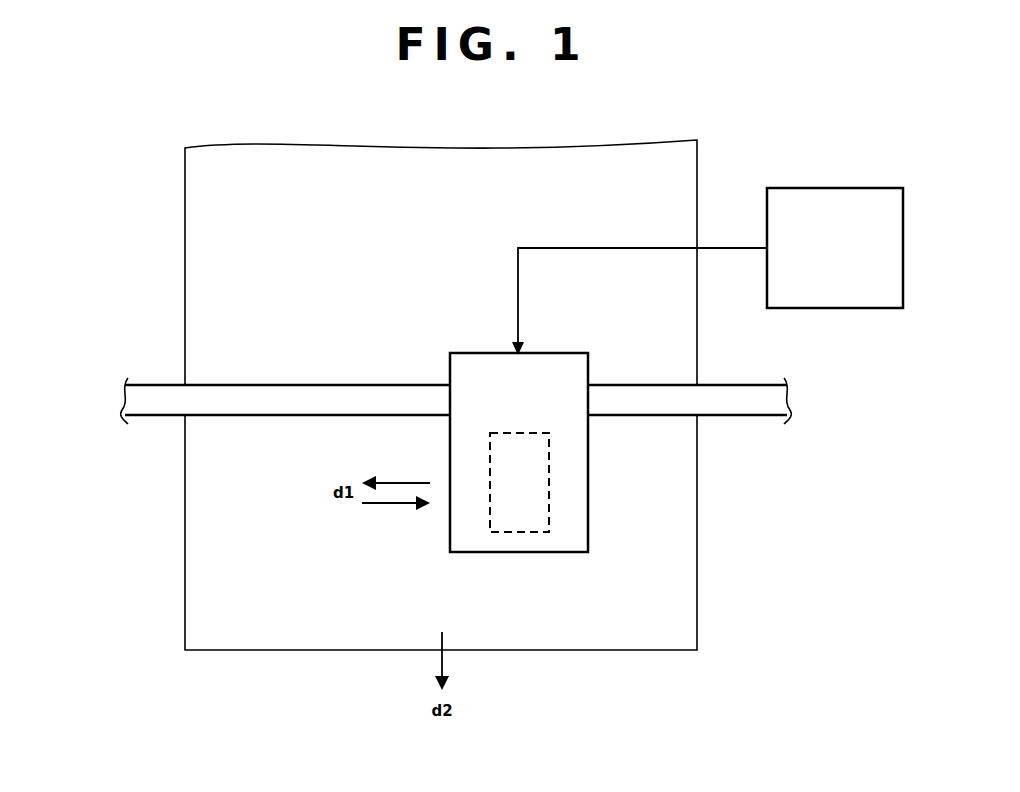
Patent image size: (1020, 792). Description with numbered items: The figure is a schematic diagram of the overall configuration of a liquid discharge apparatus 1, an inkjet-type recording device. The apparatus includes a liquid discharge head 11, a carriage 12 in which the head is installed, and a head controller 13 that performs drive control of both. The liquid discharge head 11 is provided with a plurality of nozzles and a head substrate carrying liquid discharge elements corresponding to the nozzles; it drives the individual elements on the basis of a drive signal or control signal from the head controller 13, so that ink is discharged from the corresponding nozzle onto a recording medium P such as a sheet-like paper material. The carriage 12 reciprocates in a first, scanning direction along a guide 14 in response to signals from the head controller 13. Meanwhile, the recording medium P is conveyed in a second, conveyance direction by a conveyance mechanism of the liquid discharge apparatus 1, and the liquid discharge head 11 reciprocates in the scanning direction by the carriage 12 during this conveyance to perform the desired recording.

The liquid discharge apparatus 1 is at (130, 143).
The recording medium P is at (206, 652).
The guide 14 is at (241, 395).
The carriage 12 is at (568, 553).
The liquid discharge head 11 is at (522, 536).
The head controller 13 is at (823, 259).